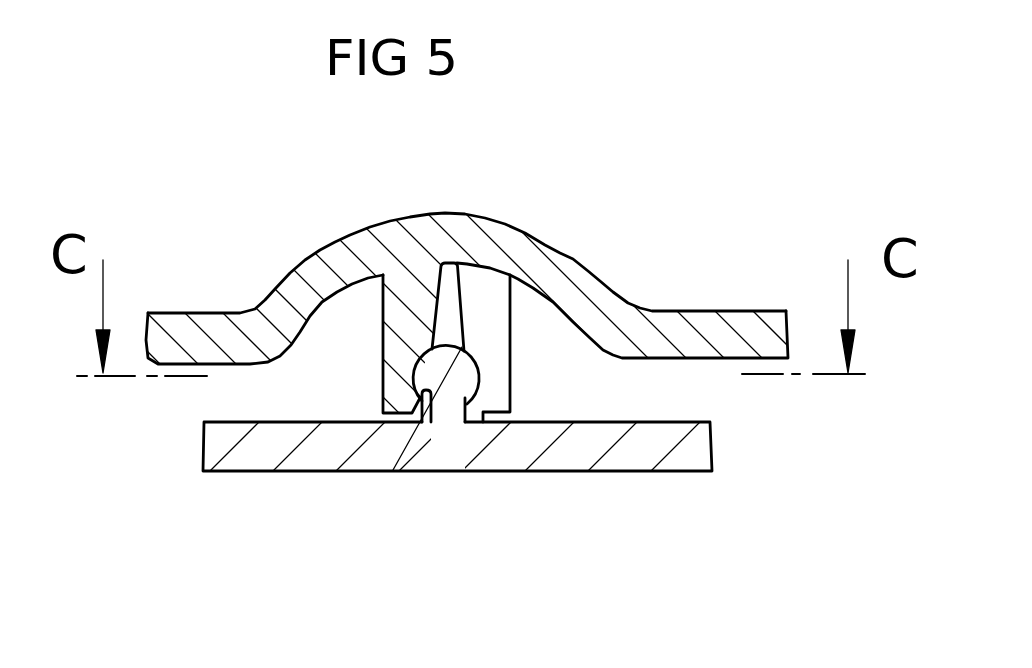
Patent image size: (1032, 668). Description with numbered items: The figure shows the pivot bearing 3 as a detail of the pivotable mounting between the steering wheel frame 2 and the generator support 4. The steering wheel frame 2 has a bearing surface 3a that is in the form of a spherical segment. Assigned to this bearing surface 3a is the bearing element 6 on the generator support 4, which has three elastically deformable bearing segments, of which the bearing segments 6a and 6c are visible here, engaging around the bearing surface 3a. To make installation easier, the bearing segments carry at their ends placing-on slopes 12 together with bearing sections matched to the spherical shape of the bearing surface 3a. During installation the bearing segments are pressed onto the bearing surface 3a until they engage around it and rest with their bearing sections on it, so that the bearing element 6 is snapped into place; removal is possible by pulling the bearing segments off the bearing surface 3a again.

The steering wheel frame 2 is at (575, 445).
The pivot bearing 3 is at (479, 495).
The bearing surface 3a is at (457, 373).
The generator support 4 is at (567, 277).
The bearing element 6 is at (474, 364).
The bearing segment 6a is at (505, 353).
The bearing segment 6c is at (405, 335).
The placing-on slope 12 is at (420, 421).